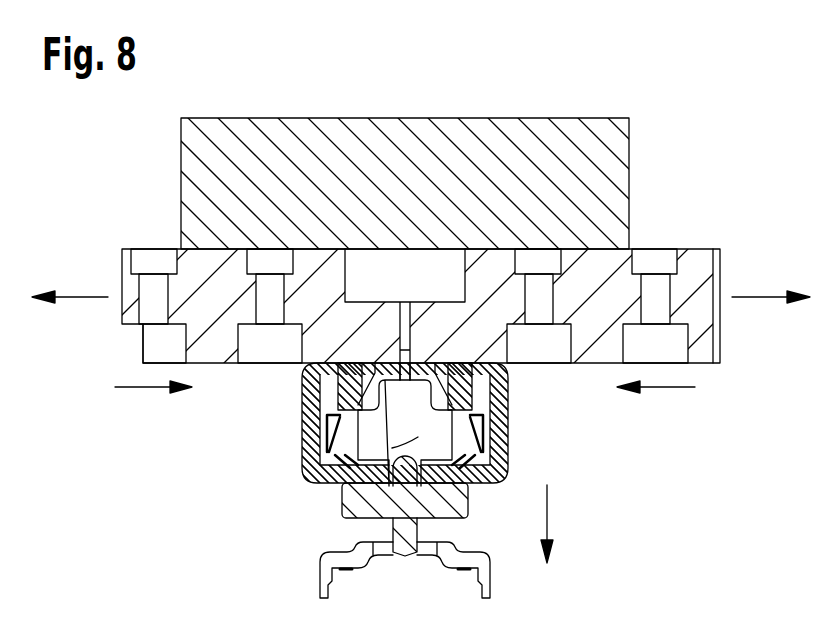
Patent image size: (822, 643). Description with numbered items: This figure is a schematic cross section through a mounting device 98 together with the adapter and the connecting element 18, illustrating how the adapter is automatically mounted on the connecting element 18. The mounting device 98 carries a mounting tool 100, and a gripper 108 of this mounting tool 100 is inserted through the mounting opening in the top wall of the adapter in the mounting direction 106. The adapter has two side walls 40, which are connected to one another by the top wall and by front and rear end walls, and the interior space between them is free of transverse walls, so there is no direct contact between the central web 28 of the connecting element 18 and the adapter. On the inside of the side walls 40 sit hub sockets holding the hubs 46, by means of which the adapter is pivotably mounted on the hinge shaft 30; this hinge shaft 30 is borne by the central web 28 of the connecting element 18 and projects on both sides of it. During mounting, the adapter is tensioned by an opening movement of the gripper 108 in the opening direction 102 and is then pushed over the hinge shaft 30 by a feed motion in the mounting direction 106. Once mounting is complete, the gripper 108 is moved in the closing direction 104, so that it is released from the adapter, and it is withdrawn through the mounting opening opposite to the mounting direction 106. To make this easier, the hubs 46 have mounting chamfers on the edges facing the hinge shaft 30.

The mounting device 98 is at (383, 143).
The mounting tool 100 is at (702, 263).
The opening direction 102 is at (82, 297).
The closing direction 104 is at (138, 387).
The mounting direction 106 is at (547, 513).
The side walls 40 is at (460, 387).
The hubs 46 is at (460, 435).
The gripper 108 is at (382, 397).
The hinge shaft 30 is at (352, 503).
The central web 28 is at (400, 528).
The connecting element 18 is at (447, 557).